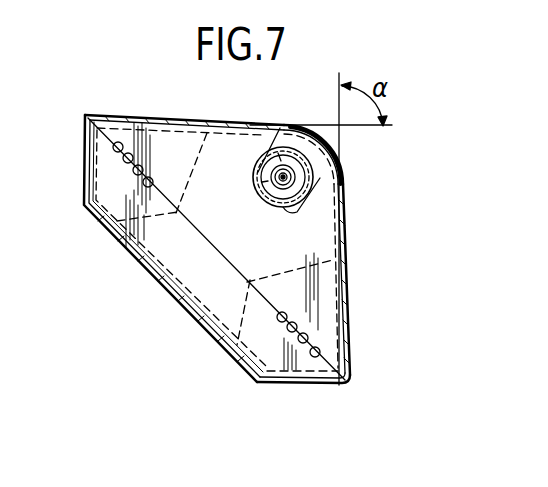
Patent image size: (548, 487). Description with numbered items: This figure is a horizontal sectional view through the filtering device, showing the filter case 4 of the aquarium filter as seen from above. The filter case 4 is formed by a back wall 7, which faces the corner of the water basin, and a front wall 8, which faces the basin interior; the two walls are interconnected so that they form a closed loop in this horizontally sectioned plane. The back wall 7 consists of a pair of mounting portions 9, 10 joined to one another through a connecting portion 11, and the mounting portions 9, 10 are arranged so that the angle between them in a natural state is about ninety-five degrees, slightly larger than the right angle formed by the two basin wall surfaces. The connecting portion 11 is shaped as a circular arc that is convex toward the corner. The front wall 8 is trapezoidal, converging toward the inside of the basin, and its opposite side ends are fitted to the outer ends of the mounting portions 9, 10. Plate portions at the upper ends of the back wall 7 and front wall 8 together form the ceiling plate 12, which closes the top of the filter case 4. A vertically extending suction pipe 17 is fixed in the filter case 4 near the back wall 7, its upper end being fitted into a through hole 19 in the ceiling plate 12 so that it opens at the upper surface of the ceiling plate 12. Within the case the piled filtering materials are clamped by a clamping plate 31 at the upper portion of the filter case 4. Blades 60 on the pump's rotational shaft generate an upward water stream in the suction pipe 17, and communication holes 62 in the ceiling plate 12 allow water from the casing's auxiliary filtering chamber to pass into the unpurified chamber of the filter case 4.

The filter case 4 is at (393, 426).
The back wall 7 is at (356, 370).
The front wall 8 is at (308, 386).
The mounting portion 9 is at (197, 120).
The mounting portion 10 is at (344, 272).
The connecting portion 11 is at (328, 135).
The ceiling plate 12 is at (190, 293).
The suction pipe 17 is at (337, 217).
The through hole 19 is at (258, 192).
The clamping plate 31 is at (153, 250).
The blades 60 is at (322, 172).
The communication holes 62 is at (287, 316).